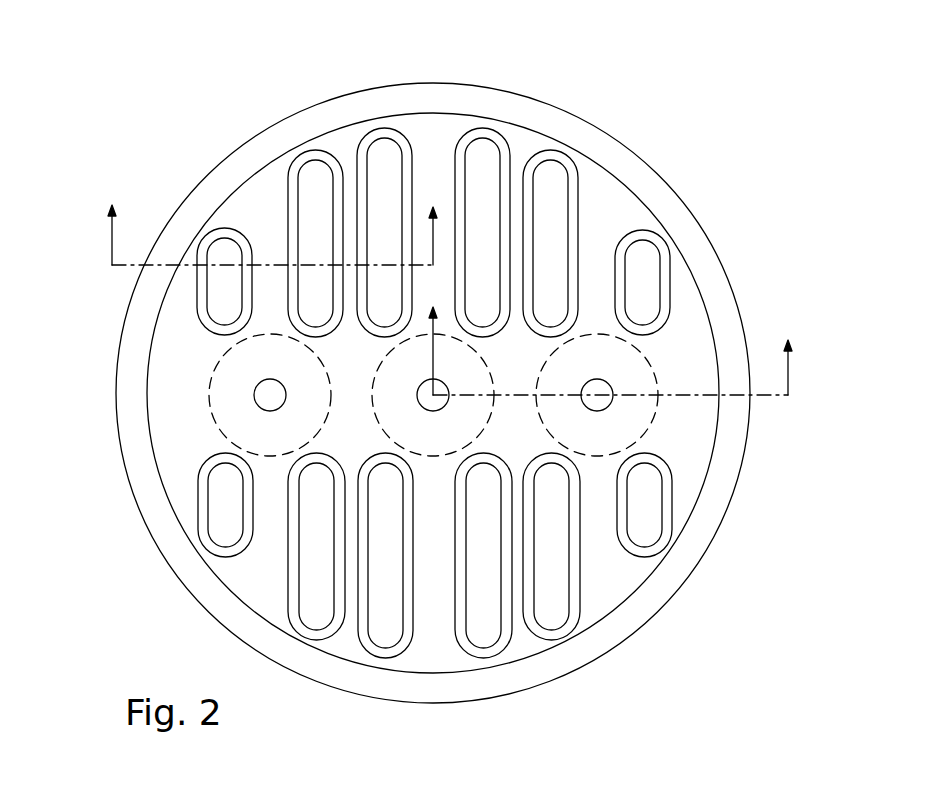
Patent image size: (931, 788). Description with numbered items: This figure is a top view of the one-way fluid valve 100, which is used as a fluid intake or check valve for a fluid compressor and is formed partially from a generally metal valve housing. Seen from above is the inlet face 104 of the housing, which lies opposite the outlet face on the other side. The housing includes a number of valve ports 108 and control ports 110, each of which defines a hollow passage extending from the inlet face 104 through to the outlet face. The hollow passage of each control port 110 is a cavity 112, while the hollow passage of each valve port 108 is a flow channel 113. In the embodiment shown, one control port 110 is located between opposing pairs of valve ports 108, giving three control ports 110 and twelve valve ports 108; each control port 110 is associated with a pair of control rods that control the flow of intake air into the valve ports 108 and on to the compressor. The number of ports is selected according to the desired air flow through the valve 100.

The one-way fluid valve 100 is at (125, 78).
The inlet face 104 is at (687, 333).
The valve port 108 is at (293, 158).
The control port 110 is at (252, 383).
The cavity 112 is at (212, 415).
The flow channel 113 is at (217, 247).